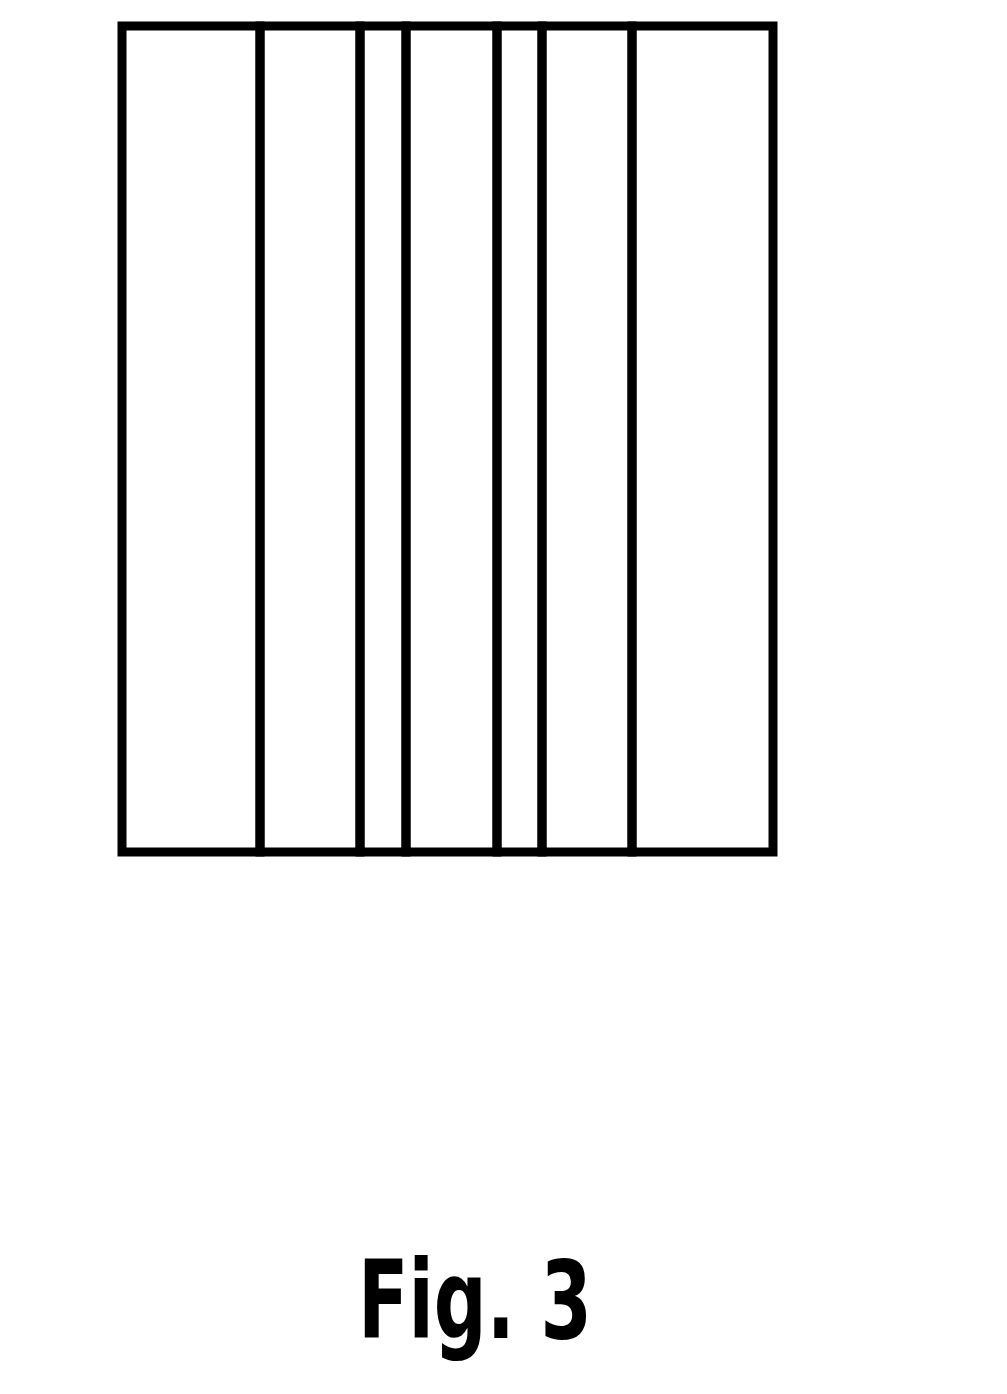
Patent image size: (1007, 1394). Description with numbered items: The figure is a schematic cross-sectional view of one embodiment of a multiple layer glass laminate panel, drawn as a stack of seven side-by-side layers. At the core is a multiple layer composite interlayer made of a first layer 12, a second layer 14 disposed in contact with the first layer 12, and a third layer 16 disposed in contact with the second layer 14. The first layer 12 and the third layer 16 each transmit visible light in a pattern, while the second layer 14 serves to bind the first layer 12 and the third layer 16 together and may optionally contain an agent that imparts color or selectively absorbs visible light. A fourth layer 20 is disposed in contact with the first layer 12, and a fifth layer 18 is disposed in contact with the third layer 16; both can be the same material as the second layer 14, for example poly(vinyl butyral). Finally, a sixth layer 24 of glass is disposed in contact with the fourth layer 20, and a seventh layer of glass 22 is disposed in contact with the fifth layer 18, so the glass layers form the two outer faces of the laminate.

The first layer 12 is at (526, 812).
The second layer 14 is at (449, 793).
The third layer 16 is at (383, 813).
The fifth layer 18 is at (308, 808).
The fourth layer 20 is at (588, 812).
The seventh layer of glass 22 is at (157, 818).
The sixth layer of glass 24 is at (720, 772).